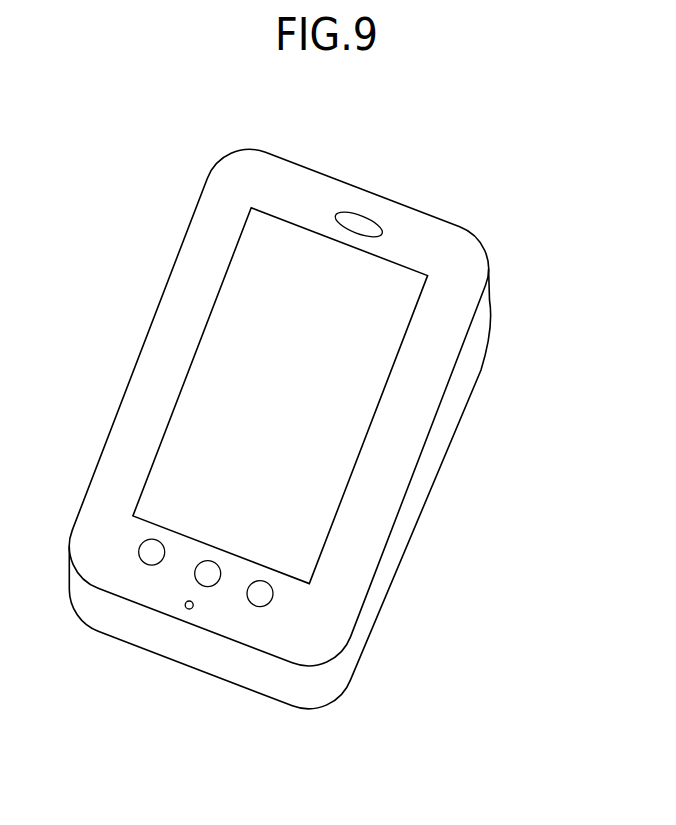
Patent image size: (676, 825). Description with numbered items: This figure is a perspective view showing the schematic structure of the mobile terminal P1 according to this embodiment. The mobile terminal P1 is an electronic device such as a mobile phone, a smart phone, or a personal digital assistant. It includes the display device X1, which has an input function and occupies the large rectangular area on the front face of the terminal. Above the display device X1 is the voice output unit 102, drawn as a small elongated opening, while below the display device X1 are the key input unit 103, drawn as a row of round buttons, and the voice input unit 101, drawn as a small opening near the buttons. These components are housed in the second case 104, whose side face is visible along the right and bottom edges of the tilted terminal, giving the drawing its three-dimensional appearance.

The mobile terminal P1 is at (468, 177).
The display device X1 is at (225, 367).
The voice input unit 101 is at (187, 608).
The voice output unit 102 is at (352, 222).
The key input unit 103 is at (258, 597).
The second case 104 is at (452, 413).